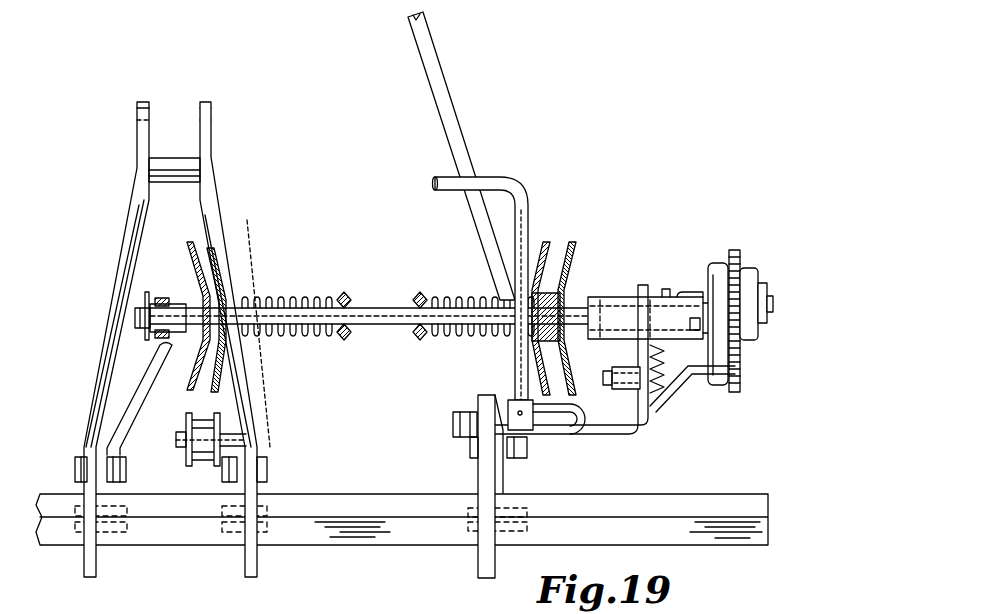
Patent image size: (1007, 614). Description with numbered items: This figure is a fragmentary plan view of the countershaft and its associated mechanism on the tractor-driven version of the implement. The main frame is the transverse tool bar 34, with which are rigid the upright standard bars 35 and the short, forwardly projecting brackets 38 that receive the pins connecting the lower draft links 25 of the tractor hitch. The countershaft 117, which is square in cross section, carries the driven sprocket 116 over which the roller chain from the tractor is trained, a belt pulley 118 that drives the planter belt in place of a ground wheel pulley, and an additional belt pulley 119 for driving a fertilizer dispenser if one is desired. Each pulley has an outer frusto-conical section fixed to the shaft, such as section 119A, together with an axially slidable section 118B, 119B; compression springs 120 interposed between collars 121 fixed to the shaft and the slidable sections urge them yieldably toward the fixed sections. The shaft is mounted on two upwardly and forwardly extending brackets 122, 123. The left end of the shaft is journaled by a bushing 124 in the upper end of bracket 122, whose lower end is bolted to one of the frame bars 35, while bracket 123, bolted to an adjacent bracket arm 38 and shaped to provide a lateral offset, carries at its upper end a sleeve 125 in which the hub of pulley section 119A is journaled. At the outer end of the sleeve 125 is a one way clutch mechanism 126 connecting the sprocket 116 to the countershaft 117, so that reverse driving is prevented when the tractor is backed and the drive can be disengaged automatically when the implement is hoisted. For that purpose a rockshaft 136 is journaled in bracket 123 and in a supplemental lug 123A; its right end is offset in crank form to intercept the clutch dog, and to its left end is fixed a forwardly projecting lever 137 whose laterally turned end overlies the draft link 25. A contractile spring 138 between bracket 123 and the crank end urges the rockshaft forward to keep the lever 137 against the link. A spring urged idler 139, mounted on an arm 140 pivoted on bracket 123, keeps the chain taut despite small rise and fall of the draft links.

The lower draft link 25 is at (448, 90).
The transverse tool bar 34 is at (305, 538).
The upright standard bars 35 is at (123, 258).
The forwardly projecting bracket 38 is at (478, 473).
The driven sprocket 116 is at (736, 250).
The countershaft 117 is at (382, 320).
The belt pulley 118 is at (210, 248).
The axially slidable pulley section 118B is at (220, 388).
The additional belt pulley 119 is at (571, 243).
The outer frusto-conical pulley section 119A is at (580, 278).
The axially slidable pulley section 119B is at (556, 250).
The compression springs 120 is at (283, 295).
The collars 121 is at (415, 295).
The bracket 122 is at (137, 388).
The bracket 123 is at (595, 437).
The supplemental bracket or lug 123A is at (577, 438).
The bushing 124 is at (145, 296).
The sleeve 125 is at (590, 297).
The one way clutch mechanism 126 is at (716, 251).
The rockshaft 136 is at (670, 395).
The forwardly projecting arm or lever 137 is at (528, 207).
The contractile spring 138 is at (657, 392).
The spring urged idler 139 is at (752, 264).
The idler arm 140 is at (604, 377).